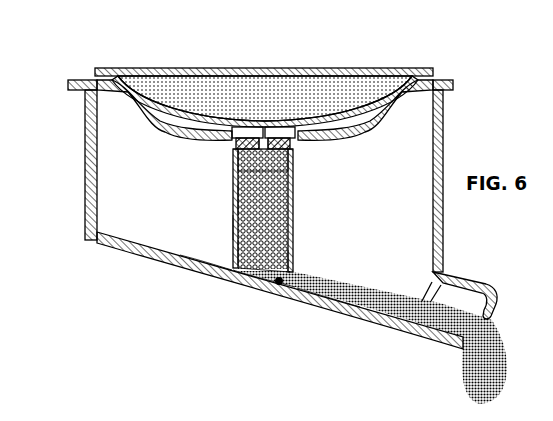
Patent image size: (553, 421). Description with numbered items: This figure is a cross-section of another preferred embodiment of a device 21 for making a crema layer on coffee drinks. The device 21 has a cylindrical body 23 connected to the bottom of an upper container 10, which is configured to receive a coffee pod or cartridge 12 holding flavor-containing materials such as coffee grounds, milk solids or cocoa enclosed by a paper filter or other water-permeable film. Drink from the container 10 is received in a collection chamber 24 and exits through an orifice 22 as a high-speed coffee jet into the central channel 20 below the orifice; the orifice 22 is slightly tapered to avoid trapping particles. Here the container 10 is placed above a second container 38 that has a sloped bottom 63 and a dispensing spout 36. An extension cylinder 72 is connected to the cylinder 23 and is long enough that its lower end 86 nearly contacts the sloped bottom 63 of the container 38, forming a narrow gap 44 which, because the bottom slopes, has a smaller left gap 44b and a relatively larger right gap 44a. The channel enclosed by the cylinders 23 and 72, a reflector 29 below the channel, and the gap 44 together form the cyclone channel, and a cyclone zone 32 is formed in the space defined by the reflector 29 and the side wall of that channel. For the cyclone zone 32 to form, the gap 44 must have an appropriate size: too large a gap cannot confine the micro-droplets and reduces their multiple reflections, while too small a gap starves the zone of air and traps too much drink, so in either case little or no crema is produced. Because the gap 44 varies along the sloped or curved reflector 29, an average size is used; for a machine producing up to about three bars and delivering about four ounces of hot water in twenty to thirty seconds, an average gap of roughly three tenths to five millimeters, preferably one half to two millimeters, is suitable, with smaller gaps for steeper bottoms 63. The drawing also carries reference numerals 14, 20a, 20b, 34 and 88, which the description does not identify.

The container 10 is at (150, 132).
The coffee pod or cartridge 12 is at (167, 63).
The granular material in tube 14 is at (296, 199).
The central channel 20 is at (298, 226).
The upper end of tube 20a is at (296, 157).
The lower end of tube 20b is at (298, 271).
The device 21 is at (228, 228).
The orifice 22 is at (236, 146).
The cylindrical body 23 is at (243, 155).
The collection chamber 24 is at (262, 145).
The reflector 29 is at (247, 284).
The cyclone zone 32 is at (246, 236).
The outlet opening 34 is at (402, 292).
The dispensing spout 36 is at (463, 293).
The container 38 is at (82, 193).
The narrow gap 44 is at (279, 287).
The right gap 44a is at (298, 294).
The left gap 44b is at (233, 274).
The sloped bottom 63 is at (351, 316).
The extension cylinder 72 is at (238, 201).
The lower end 86 is at (296, 262).
The upper granule section 88 is at (294, 165).